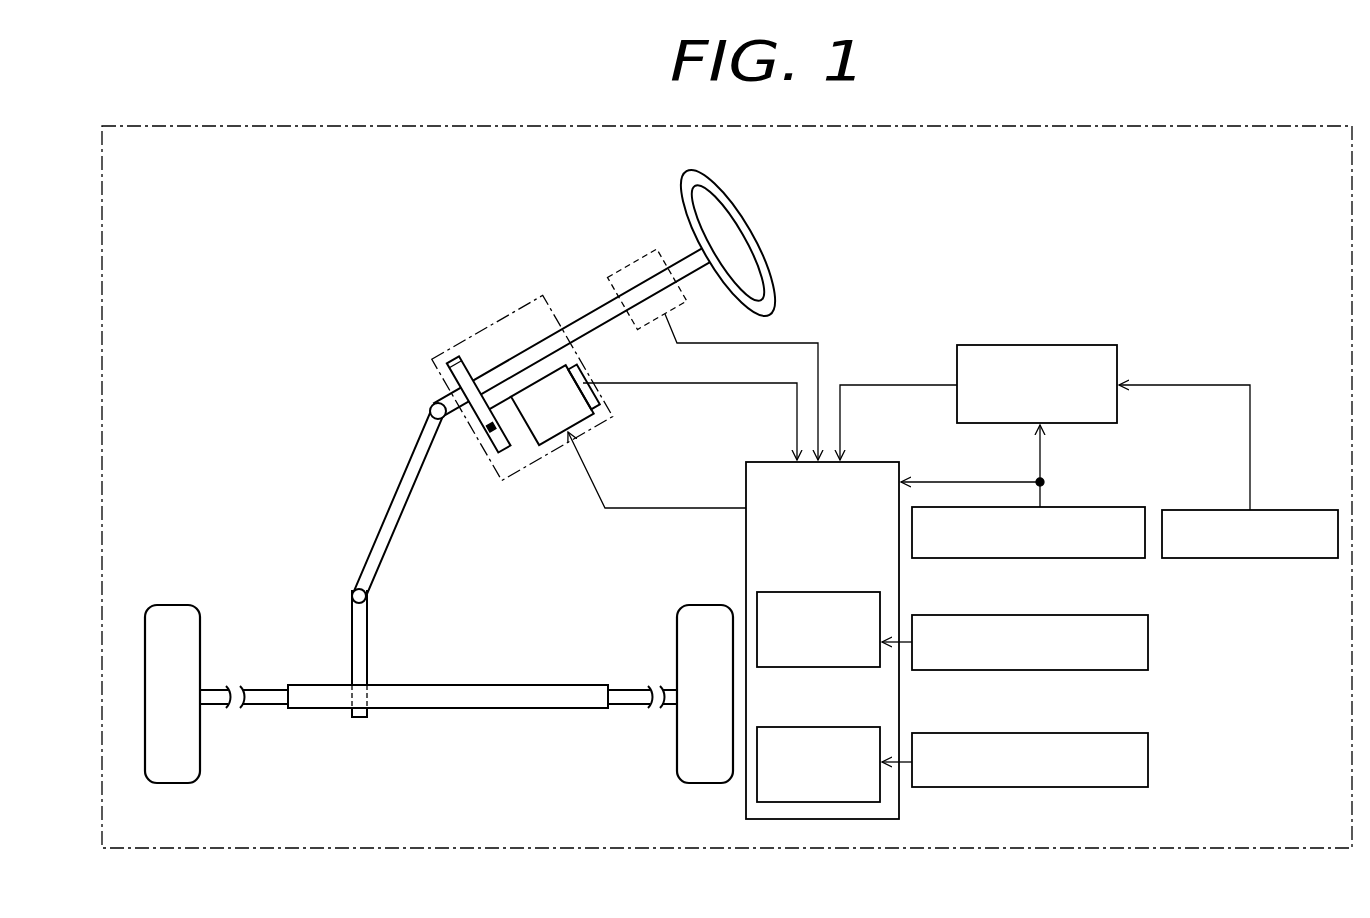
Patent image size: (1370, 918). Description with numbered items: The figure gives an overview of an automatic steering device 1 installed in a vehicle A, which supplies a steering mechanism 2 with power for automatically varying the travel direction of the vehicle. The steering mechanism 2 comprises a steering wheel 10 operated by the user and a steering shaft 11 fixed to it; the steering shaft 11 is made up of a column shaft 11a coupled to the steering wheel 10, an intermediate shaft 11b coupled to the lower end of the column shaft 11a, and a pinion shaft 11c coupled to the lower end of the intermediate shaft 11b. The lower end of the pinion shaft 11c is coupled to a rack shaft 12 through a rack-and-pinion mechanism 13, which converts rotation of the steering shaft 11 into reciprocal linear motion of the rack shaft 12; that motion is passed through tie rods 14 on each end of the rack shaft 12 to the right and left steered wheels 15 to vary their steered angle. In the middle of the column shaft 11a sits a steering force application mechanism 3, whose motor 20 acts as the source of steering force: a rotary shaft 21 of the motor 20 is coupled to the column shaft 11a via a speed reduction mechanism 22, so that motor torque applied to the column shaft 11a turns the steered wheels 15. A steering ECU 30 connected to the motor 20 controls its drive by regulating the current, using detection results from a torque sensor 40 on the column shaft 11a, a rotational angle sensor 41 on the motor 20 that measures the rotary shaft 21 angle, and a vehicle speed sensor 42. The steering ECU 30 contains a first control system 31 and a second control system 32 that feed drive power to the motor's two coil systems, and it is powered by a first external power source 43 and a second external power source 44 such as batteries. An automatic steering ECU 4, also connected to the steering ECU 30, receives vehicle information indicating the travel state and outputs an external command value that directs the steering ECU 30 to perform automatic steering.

The vehicle A is at (1165, 126).
The automatic steering device 1 is at (245, 187).
The steering mechanism 2 is at (255, 389).
The steering force application mechanism 3 is at (490, 328).
The automatic steering ECU 4 is at (1095, 343).
The steering wheel 10 is at (748, 225).
The steering shaft 11 is at (366, 489).
The column shaft 11a is at (443, 403).
The intermediate shaft 11b is at (406, 475).
The pinion shaft 11c is at (335, 581).
The rack shaft 12 is at (443, 710).
The rack-and-pinion mechanism 13 is at (333, 668).
The tie rod 14 is at (262, 705).
The steered wheel 15 is at (172, 784).
The motor 20 is at (530, 447).
The rotary shaft 21 is at (514, 446).
The speed reduction mechanism 22 is at (487, 450).
The steering ECU 30 is at (763, 462).
The first control system 31 is at (852, 592).
The second control system 32 is at (852, 727).
The torque sensor 40 is at (635, 263).
The rotational angle sensor 41 is at (596, 405).
The vehicle speed sensor 42 is at (1128, 507).
The first external power source 43 is at (1125, 615).
The second external power source 44 is at (1127, 733).